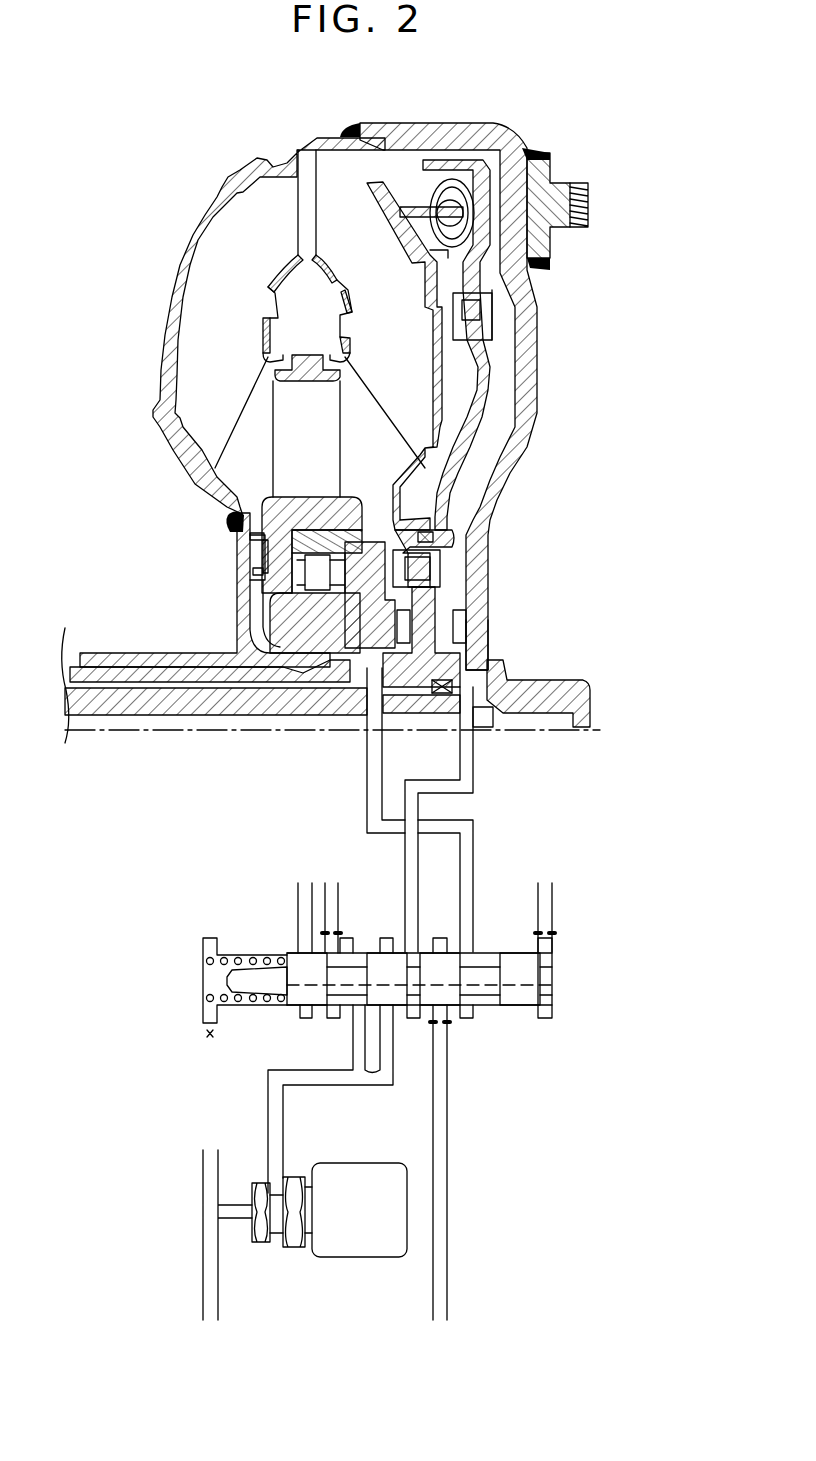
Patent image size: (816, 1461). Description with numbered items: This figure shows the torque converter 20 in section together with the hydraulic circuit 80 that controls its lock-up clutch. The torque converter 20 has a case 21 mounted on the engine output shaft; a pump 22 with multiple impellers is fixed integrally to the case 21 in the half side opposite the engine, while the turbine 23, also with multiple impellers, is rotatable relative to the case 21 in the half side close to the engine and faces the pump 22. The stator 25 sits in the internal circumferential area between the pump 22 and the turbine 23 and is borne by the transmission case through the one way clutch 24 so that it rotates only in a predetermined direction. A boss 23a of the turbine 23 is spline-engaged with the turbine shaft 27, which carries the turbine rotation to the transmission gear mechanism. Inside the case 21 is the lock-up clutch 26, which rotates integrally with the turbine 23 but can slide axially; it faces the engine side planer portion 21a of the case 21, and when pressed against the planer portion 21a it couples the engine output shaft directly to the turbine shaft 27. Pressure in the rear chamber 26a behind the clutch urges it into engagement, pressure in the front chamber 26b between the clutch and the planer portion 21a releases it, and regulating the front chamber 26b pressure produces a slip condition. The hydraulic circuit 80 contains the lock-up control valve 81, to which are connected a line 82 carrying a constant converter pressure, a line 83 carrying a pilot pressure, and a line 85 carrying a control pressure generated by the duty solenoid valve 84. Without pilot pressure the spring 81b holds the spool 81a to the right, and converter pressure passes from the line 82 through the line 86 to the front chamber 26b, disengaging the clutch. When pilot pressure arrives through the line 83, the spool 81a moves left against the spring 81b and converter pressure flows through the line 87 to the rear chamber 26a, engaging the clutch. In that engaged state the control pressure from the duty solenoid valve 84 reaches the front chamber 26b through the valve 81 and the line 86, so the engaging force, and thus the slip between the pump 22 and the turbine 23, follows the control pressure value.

The torque converter 20 is at (565, 133).
The case 21 is at (388, 125).
The planer portion 21a is at (517, 317).
The pump 22 is at (215, 265).
The turbine 23 is at (355, 188).
The boss 23a is at (420, 603).
The one way clutch 24 is at (320, 584).
The stator 25 is at (240, 513).
The lock-up clutch 26 is at (487, 430).
The rear chamber 26a is at (405, 170).
The front chamber 26b is at (493, 342).
The turbine shaft 27 is at (150, 705).
The hydraulic circuit 80 is at (590, 838).
The lock-up control valve 81 is at (250, 946).
The spool 81a is at (298, 987).
The spring 81b is at (212, 960).
The line 82 is at (448, 1133).
The line 83 is at (560, 914).
The duty solenoid valve 84 is at (360, 1163).
The line 85 is at (268, 1113).
The line 86 is at (475, 782).
The line 87 is at (372, 805).